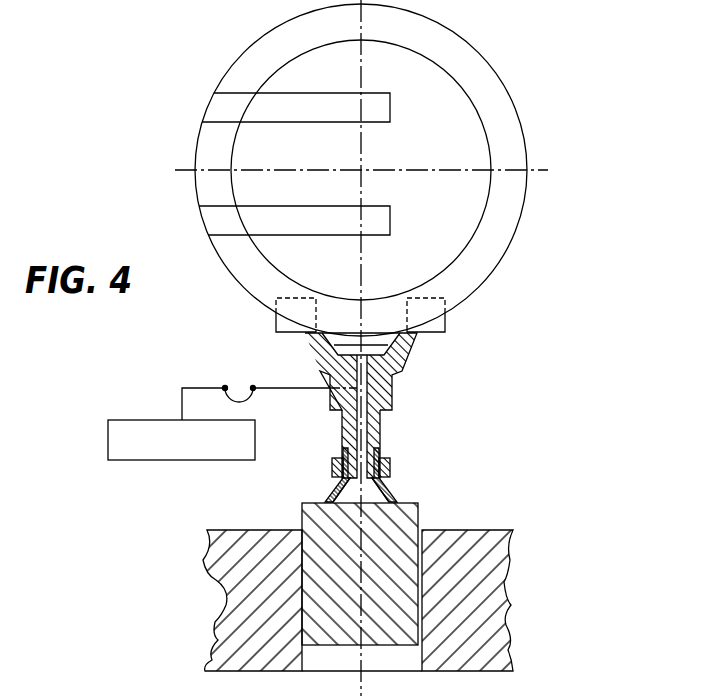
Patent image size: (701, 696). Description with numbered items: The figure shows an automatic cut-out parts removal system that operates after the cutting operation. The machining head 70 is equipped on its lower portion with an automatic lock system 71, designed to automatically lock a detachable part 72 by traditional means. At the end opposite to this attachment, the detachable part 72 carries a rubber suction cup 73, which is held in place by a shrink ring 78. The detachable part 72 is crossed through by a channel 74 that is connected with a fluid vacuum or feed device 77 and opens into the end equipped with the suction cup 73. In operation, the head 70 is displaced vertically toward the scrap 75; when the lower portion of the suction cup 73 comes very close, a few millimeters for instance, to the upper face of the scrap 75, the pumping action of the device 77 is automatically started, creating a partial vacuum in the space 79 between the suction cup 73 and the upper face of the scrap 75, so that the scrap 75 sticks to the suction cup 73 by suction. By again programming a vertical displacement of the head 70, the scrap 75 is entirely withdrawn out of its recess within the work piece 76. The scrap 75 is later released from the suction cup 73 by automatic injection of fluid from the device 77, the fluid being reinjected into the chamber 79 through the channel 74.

The machining head 70 is at (510, 236).
The automatic lock system 71 is at (433, 310).
The detachable part 72 is at (393, 360).
The rubber suction cup 73 is at (390, 492).
The channel 74 is at (363, 424).
The scrap 75 is at (313, 523).
The work piece 76 is at (488, 552).
The fluid vacuum or feed device 77 is at (133, 435).
The shrink ring 78 is at (390, 467).
The space 79 is at (355, 497).